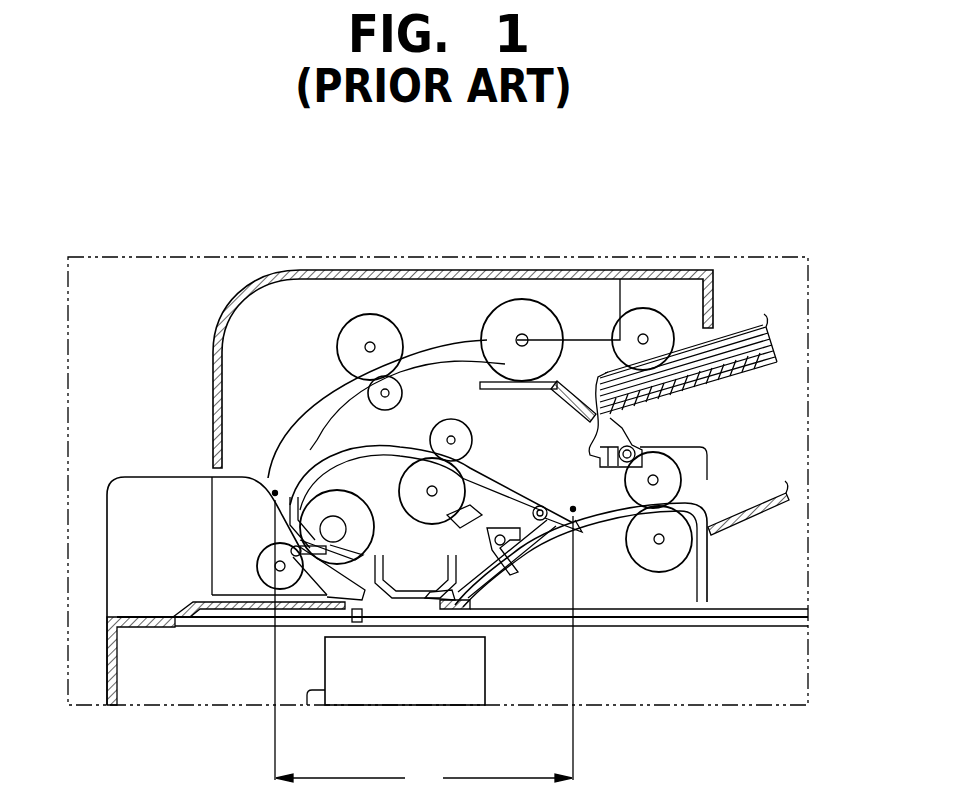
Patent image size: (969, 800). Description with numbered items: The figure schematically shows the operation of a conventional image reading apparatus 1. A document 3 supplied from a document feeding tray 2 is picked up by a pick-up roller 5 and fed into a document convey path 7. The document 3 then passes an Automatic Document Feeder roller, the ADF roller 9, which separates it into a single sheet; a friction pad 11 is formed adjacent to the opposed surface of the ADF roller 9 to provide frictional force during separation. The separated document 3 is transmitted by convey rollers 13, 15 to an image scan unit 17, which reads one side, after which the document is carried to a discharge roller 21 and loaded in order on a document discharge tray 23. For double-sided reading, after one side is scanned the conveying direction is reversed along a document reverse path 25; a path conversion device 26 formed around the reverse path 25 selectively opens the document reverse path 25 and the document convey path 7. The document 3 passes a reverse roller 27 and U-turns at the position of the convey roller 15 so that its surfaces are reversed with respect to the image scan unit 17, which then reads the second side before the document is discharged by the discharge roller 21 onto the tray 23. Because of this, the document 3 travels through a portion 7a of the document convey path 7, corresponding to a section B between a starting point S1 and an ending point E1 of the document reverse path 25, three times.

The image reading apparatus 1 is at (728, 208).
The document feeding tray 2 is at (738, 366).
The document 3 is at (738, 333).
The pick-up roller 5 is at (640, 307).
The document convey path 7 is at (318, 393).
The portion of the document convey path 7a is at (496, 600).
The ADF roller 9 is at (548, 298).
The friction pad 11 is at (480, 385).
The convey roller 13 is at (371, 312).
The convey roller 15 is at (265, 558).
The image scan unit 17 is at (306, 697).
The discharge roller 21 is at (683, 474).
The document discharge tray 23 is at (742, 525).
The document reverse path 25 is at (412, 458).
The path conversion device 26 is at (580, 530).
The reverse roller 27 is at (472, 436).
The ending point E1 is at (275, 490).
The starting point S1 is at (573, 506).
The section B is at (424, 646).